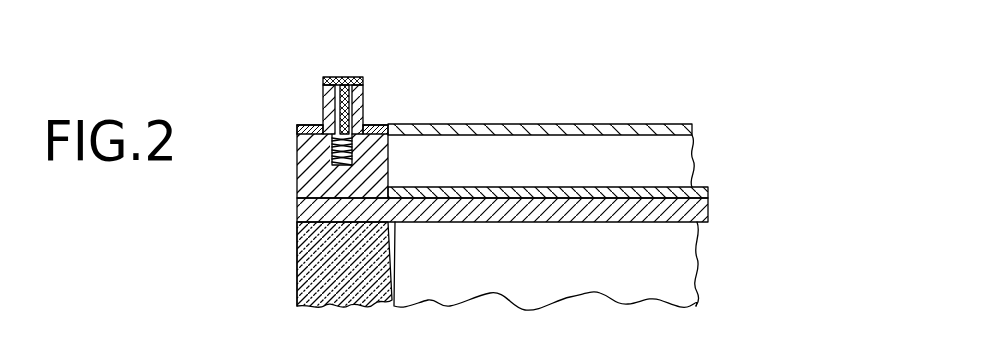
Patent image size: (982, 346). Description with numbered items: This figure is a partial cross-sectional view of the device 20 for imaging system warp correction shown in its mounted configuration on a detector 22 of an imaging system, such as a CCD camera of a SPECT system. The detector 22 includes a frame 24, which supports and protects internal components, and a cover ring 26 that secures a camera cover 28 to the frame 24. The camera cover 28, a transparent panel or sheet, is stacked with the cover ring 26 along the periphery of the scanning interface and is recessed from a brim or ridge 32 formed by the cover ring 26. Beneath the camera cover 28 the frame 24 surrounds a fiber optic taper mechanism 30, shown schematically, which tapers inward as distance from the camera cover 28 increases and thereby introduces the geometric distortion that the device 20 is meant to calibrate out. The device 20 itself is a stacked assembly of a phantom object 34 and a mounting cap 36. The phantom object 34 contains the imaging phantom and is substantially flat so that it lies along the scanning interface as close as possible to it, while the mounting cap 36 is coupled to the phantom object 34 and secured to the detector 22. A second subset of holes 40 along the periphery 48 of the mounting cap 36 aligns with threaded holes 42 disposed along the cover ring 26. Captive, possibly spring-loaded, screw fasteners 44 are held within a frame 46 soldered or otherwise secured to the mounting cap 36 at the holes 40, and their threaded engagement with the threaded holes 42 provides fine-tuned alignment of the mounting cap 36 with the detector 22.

The device 20 is at (659, 122).
The detector 22 is at (295, 270).
The frame 24 is at (295, 246).
The cover ring 26 is at (294, 160).
The camera cover 28 is at (708, 208).
The fiber optic taper mechanism 30 is at (568, 267).
The ridge 32 is at (318, 128).
The phantom object 34 is at (708, 186).
The mounting cap 36 is at (575, 124).
The holes 40 is at (385, 128).
The threaded holes 42 is at (325, 110).
The screw fasteners 44 is at (362, 95).
The frame 46 is at (335, 80).
The periphery 48 is at (295, 133).